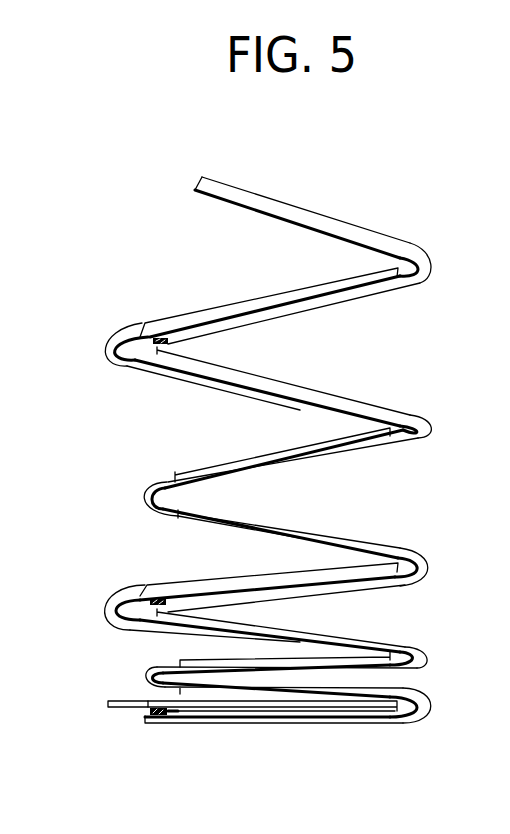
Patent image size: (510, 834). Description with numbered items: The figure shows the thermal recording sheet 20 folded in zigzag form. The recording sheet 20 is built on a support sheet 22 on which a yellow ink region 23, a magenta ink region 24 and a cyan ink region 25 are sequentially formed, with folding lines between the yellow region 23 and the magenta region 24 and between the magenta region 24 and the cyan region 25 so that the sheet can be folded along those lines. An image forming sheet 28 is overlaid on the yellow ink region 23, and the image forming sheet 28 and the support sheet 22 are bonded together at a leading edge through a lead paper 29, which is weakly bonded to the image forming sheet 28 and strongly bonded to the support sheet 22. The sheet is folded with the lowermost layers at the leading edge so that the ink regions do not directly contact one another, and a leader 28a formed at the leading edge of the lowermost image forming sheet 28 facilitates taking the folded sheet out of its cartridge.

The thermal recording sheet 20 is at (407, 200).
The support sheet 22 is at (263, 718).
The yellow ink region 23 is at (317, 712).
The magenta ink region 24 is at (362, 697).
The cyan ink region 25 is at (353, 660).
The image forming sheet 28 is at (207, 704).
The leader 28a is at (117, 700).
The lead paper 29 is at (162, 716).